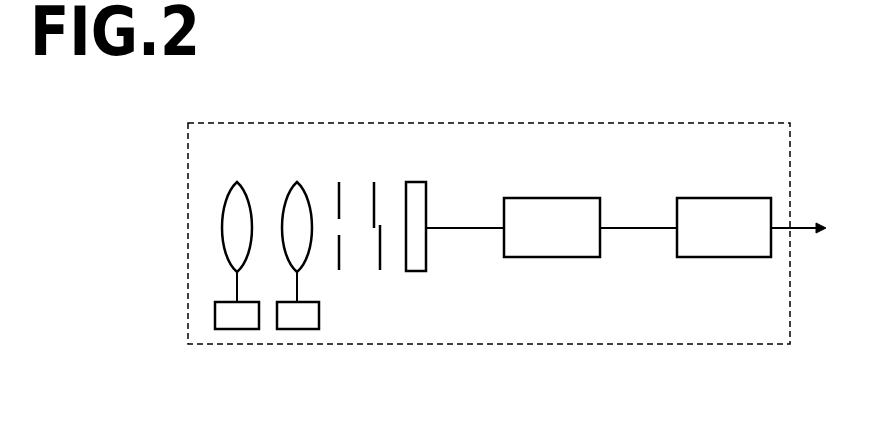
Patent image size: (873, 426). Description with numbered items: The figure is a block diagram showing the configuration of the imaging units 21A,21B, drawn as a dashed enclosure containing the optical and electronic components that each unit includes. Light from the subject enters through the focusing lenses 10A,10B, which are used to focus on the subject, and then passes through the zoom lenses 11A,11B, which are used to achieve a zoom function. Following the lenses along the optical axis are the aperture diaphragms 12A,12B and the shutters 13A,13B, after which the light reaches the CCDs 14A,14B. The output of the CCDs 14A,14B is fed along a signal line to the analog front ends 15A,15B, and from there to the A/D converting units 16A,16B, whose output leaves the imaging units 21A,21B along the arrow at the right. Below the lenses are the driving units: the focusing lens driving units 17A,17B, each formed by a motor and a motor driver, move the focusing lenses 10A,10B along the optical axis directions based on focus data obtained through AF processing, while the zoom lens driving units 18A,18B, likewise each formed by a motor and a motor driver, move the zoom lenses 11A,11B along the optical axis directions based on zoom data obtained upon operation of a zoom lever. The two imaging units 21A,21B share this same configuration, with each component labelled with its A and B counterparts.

The focusing lenses 10A,10B is at (223, 230).
The zoom lenses 11A,11B is at (297, 182).
The aperture diaphragms 12A,12B is at (339, 182).
The shutters 13A,13B is at (374, 182).
The CCDs 14A,14B is at (416, 271).
The analog front ends (AFE) 15A,15B is at (551, 257).
The A/D converting units 16A,16B is at (721, 257).
The focusing lens driving units 17A,17B is at (215, 317).
The zoom lens driving units 18A,18B is at (298, 330).
The imaging units 21A,21B is at (745, 93).